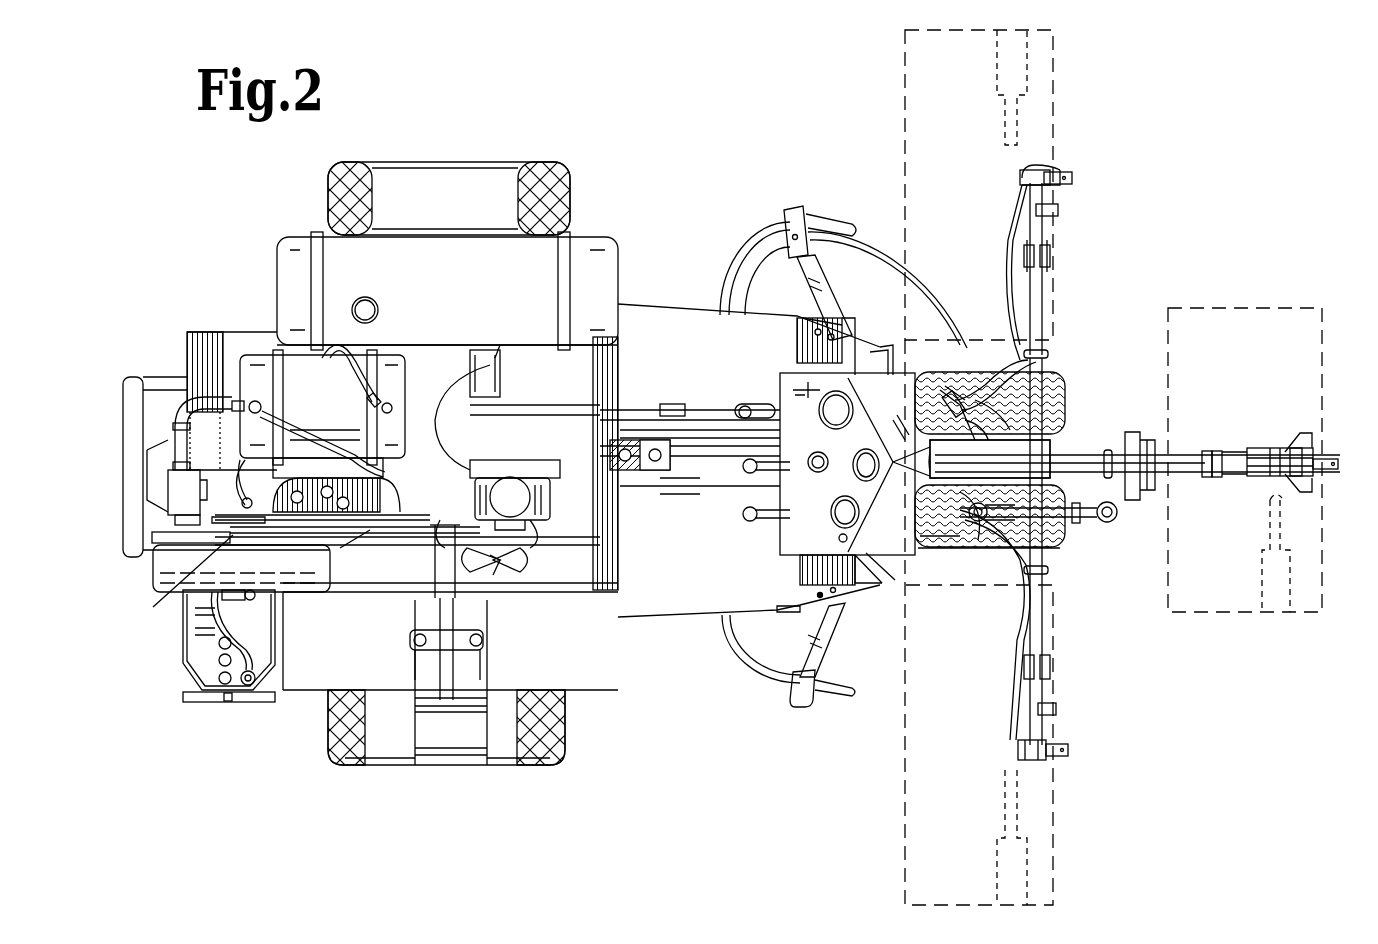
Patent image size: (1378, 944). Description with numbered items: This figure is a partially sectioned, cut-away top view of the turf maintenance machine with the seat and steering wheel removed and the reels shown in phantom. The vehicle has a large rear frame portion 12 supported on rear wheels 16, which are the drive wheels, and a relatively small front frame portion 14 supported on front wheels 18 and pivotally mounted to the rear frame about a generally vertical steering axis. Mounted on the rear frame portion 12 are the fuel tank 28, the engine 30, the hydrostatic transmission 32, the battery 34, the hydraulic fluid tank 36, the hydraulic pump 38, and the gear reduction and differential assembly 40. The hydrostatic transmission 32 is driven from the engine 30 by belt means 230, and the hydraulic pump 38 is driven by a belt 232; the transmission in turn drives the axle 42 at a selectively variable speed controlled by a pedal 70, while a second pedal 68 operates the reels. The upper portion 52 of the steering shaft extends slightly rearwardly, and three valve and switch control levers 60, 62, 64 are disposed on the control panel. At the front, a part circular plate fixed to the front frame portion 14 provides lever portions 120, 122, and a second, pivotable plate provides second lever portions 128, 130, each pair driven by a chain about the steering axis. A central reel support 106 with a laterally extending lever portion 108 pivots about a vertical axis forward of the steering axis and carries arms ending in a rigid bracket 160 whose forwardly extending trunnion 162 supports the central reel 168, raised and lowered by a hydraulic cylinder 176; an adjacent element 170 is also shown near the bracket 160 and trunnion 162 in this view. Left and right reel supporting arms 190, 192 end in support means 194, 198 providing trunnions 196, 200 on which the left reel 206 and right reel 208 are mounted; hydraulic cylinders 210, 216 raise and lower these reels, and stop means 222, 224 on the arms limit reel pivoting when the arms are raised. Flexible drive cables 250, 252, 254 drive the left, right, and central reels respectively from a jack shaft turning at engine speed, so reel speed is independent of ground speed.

The rear frame portion 12 is at (642, 262).
The front frame portion 14 is at (1085, 400).
The rear wheels 16 is at (566, 192).
The front wheels 18 is at (1063, 390).
The fuel tank 28 is at (462, 280).
The engine 30 is at (310, 470).
The hydrostatic transmission 32 is at (565, 500).
The battery 34 is at (200, 662).
The hydraulic fluid tank 36 is at (258, 373).
The hydraulic pump 38 is at (175, 470).
The gear reduction and differential assembly 40 is at (455, 415).
The axle 42 is at (458, 615).
The upper portion of steering shaft 52 is at (818, 472).
The valve and switch control lever 60 is at (760, 520).
The valve and switch control lever 62 is at (760, 470).
The valve and switch control lever 64 is at (755, 430).
The pedal 68 is at (880, 378).
The pedal 70 is at (880, 585).
The central reel support 106 is at (1135, 432).
The lever portion 108 is at (1117, 507).
The lever portion 120 is at (940, 390).
The lever portion 122 is at (985, 560).
The second lever portion 128 is at (980, 392).
The second lever portion 130 is at (945, 560).
The rigid bracket 160 is at (1275, 450).
The trunnion 162 is at (1330, 455).
The central reel 168 is at (1220, 618).
The clamp 170 is at (1292, 448).
The hydraulic cylinder 176 is at (1080, 470).
The left reel supporting arm 190 is at (1008, 250).
The right reel supporting arm 192 is at (1010, 668).
The support means 194 is at (1042, 170).
The trunnion 196 is at (1070, 178).
The support means 198 is at (1020, 752).
The trunnion 200 is at (1060, 748).
The left reel 206 is at (1058, 78).
The right reel 208 is at (1056, 840).
The hydraulic cylinder 210 is at (1044, 300).
The hydraulic cylinder 216 is at (1044, 608).
The stop means 222 is at (1058, 208).
The stop means 224 is at (1045, 703).
The belt means 230 is at (465, 547).
The belt 232 is at (246, 581).
The flexible drive cable 250 is at (757, 667).
The flexible drive cable 252 is at (753, 245).
The flexible drive cable 254 is at (877, 262).